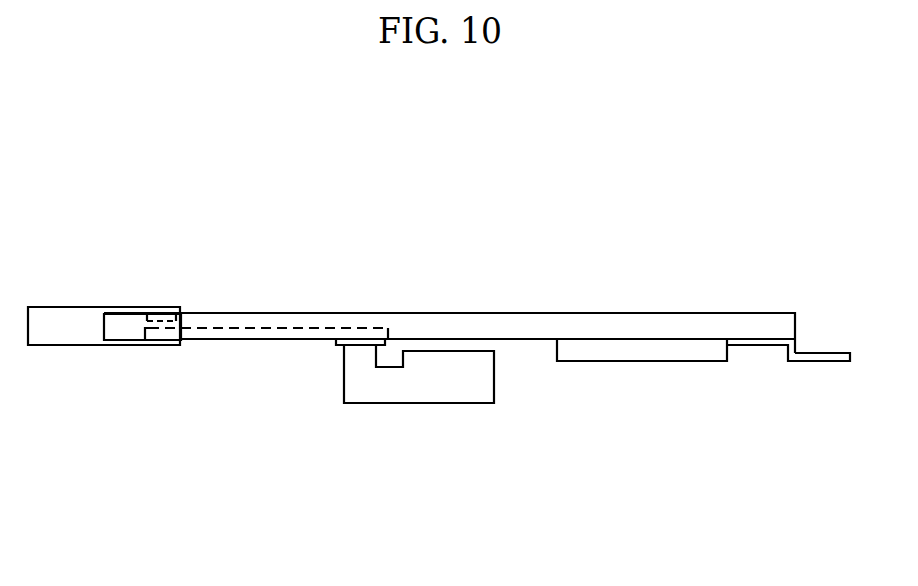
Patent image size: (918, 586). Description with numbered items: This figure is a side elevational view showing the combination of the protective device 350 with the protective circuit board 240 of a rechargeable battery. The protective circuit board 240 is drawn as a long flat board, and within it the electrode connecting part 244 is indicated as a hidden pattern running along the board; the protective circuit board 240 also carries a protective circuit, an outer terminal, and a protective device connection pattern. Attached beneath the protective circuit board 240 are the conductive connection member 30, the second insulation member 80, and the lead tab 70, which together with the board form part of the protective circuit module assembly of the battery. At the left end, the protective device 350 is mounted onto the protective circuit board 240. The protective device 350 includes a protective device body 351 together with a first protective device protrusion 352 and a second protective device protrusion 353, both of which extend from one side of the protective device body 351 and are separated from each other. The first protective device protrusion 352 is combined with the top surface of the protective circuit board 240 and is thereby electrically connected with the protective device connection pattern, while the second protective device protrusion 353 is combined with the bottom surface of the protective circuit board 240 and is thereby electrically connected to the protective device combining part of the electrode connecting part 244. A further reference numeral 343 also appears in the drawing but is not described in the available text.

The protective circuit board 240 is at (611, 283).
The electrode connecting part 244 is at (286, 332).
The conductive connection member 30 is at (423, 404).
The second insulation member 80 is at (643, 362).
The lead tab 70 is at (802, 362).
The protective device 350 is at (104, 272).
The protective device body 351 is at (64, 306).
The first protective device protrusion 352 is at (153, 312).
The feed terminal 343 is at (176, 312).
The second protective device protrusion 353 is at (155, 346).